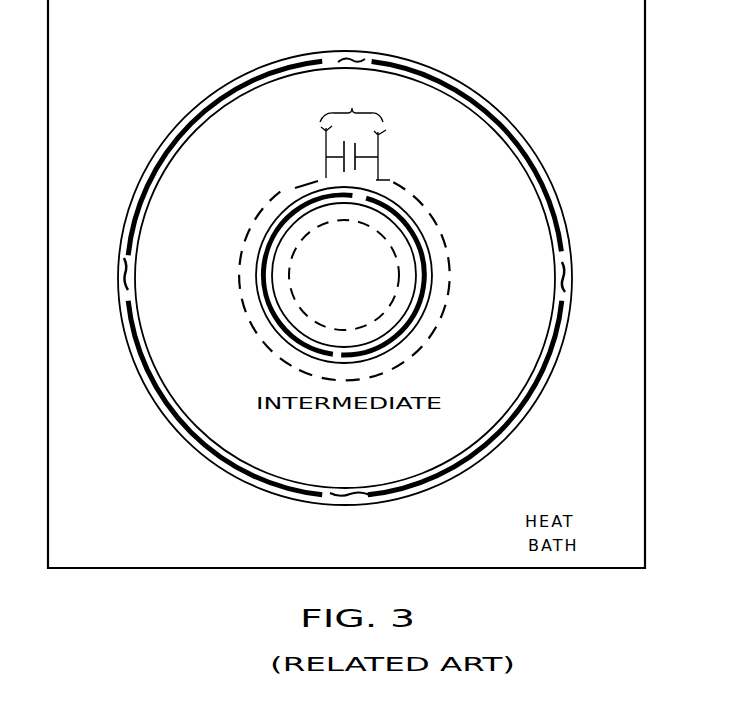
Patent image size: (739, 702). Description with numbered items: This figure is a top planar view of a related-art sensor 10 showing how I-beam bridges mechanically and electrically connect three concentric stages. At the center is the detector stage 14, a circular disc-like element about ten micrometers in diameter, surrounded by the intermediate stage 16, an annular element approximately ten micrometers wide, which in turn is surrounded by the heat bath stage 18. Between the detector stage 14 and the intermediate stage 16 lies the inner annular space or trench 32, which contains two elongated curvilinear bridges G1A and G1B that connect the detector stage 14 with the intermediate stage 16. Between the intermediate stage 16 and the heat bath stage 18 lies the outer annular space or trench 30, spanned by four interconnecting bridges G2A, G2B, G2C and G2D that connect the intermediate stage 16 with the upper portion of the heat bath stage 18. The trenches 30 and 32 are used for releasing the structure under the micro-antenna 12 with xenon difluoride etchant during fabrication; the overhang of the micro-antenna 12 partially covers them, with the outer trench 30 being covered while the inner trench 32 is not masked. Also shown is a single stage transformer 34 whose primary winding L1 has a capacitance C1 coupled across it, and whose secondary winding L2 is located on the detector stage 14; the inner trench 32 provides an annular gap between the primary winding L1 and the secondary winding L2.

The sensor 10 is at (492, 47).
The micro-antenna 12 is at (355, 134).
The detector stage 14 is at (296, 312).
The intermediate stage 16 is at (164, 341).
The heat bath stage 18 is at (646, 358).
The outer annular space or trench 30 is at (352, 58).
The inner annular space or trench 32 is at (400, 208).
The single stage transformer 34 is at (471, 243).
The interconnecting bridge G2A is at (189, 134).
The interconnecting bridge G2B is at (507, 421).
The interconnecting bridge G2C is at (496, 113).
The interconnecting bridge G2D is at (198, 437).
The elongated curvilinear bridge G1A is at (267, 258).
The elongated curvilinear bridge G1B is at (429, 298).
The capacitance C1 is at (326, 178).
The primary winding L1 is at (436, 205).
The secondary winding L2 is at (322, 231).